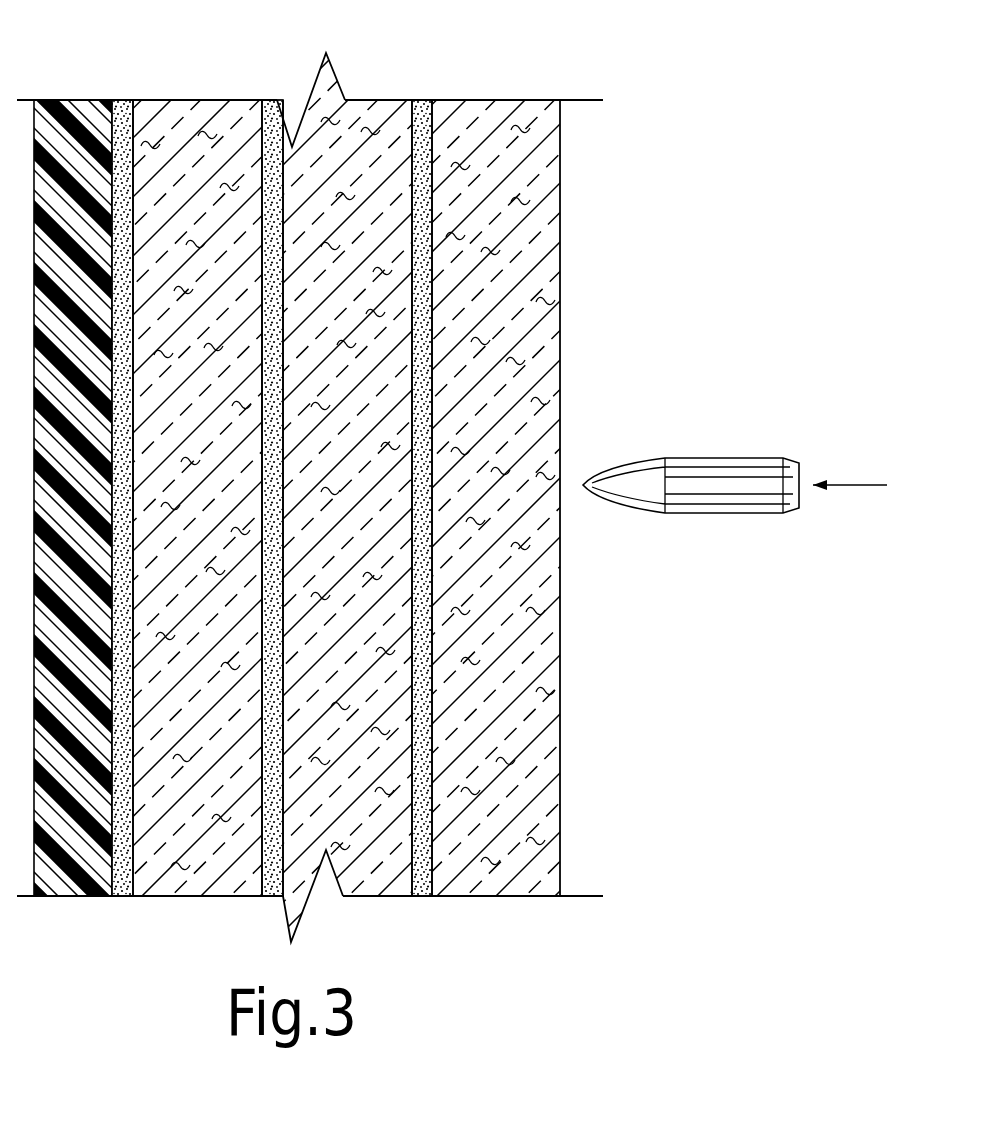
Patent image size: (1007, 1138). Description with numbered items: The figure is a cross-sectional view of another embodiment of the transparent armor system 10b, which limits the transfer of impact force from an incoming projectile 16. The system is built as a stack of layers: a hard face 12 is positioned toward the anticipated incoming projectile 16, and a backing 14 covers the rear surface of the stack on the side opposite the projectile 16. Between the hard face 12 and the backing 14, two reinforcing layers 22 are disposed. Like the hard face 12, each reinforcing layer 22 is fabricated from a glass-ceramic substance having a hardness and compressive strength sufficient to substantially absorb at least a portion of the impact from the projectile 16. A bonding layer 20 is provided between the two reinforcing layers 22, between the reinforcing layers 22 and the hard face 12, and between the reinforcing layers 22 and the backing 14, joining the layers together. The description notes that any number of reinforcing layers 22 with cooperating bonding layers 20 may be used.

The transparent armor system 10b is at (628, 161).
The hard face 12 is at (514, 100).
The backing 14 is at (66, 100).
The projectile 16 is at (724, 455).
The bonding layer 20 is at (119, 897).
The reinforcing layer 22 is at (318, 83).